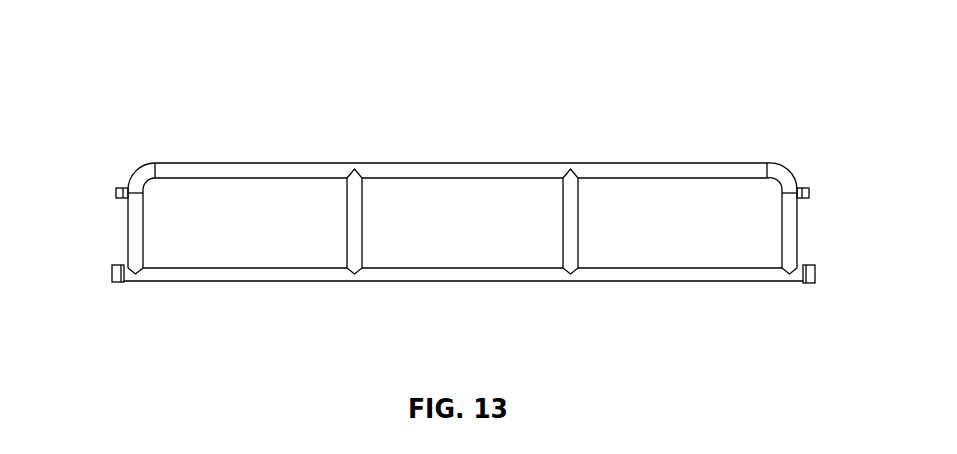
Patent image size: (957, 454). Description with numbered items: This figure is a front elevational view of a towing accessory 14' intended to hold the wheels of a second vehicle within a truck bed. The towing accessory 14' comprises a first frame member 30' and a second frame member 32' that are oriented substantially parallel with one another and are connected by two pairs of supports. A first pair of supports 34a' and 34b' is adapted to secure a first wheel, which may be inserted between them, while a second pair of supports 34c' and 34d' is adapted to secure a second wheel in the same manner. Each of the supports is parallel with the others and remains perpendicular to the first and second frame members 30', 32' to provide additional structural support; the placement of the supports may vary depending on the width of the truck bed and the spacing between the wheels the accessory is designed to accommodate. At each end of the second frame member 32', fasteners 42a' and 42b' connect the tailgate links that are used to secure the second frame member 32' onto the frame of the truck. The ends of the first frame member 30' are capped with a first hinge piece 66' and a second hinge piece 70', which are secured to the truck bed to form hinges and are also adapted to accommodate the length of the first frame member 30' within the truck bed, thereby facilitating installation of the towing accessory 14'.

The towing accessory 14' is at (592, 63).
The second frame member 32' is at (462, 151).
The first frame member 30' is at (463, 303).
The support 34a' is at (174, 232).
The support 34b' is at (317, 221).
The support 34c' is at (532, 221).
The support 34d' is at (754, 232).
The fastener 42a' is at (90, 195).
The fastener 42b' is at (838, 186).
The first hinge piece 66' is at (86, 277).
The second hinge piece 70' is at (842, 274).